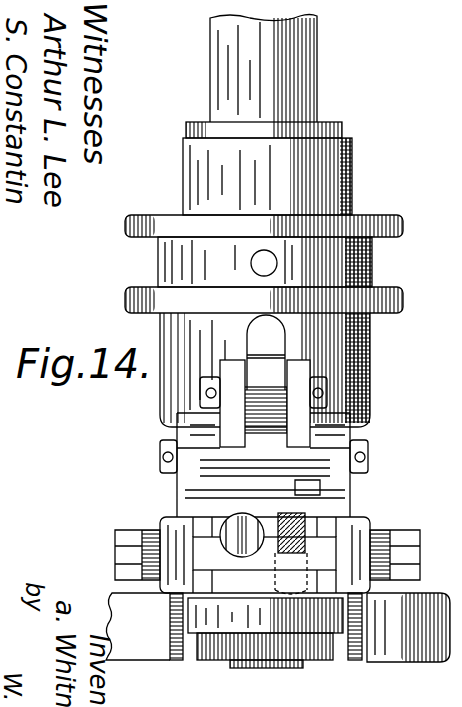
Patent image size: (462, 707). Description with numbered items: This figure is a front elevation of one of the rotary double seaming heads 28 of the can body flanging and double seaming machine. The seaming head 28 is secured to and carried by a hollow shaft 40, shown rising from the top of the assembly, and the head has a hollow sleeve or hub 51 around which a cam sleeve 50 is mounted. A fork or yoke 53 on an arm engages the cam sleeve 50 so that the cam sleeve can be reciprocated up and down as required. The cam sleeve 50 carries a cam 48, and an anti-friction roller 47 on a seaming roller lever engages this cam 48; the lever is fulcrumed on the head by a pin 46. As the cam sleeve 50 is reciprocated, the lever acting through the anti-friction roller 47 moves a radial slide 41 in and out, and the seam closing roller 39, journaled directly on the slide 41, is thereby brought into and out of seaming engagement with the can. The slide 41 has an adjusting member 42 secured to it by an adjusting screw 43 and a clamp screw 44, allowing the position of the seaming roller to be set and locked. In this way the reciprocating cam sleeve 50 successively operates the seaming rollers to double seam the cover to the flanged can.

The rotary seaming head 28 is at (353, 503).
The seam closing roller 39 is at (218, 652).
The hollow shaft 40 is at (318, 86).
The radial slide 41 is at (267, 555).
The adjusting member 42 is at (320, 522).
The adjusting screw 43 is at (219, 530).
The clamp screw 44 is at (327, 488).
The pin 46 is at (366, 453).
The anti-friction roller 47 is at (265, 400).
The cam 48 is at (266, 352).
The cam sleeve 50 is at (403, 236).
The hollow sleeve or hub 51 is at (184, 147).
The fork or yoke 53 is at (256, 263).